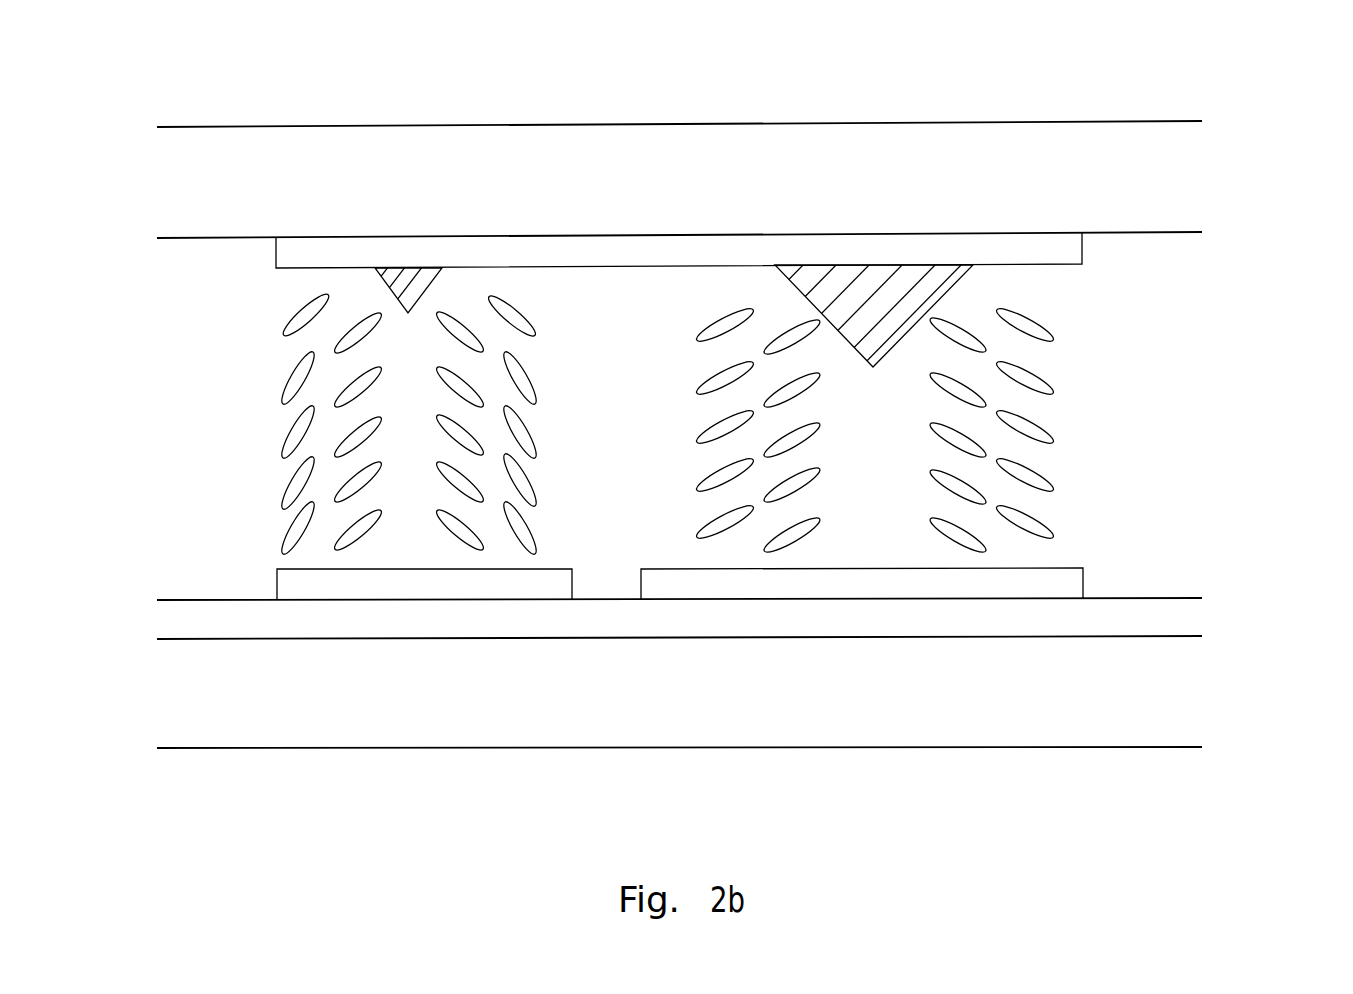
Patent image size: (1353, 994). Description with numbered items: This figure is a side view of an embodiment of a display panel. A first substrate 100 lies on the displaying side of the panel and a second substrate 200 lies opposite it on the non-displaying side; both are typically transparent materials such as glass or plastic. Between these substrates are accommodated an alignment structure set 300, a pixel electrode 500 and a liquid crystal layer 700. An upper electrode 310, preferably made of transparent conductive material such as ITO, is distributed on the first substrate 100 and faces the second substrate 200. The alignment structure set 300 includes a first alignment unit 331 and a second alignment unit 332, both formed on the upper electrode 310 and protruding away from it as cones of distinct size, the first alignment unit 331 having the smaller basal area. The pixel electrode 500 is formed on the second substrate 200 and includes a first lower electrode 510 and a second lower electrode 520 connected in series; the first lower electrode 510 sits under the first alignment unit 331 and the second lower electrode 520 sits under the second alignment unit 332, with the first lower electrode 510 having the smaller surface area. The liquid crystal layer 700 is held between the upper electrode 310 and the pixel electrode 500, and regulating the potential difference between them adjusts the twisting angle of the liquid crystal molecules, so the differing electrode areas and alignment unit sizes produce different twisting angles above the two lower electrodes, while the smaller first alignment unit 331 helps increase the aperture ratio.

The first substrate 100 is at (500, 150).
The second substrate 200 is at (953, 730).
The alignment structure set 300 is at (1213, 233).
The upper electrode 310 is at (289, 252).
The first alignment unit 331 is at (398, 279).
The second alignment unit 332 is at (797, 273).
The liquid crystal layer 700 is at (1213, 307).
The pixel electrode 500 is at (1213, 557).
The first lower electrode 510 is at (292, 587).
The second lower electrode 520 is at (657, 582).